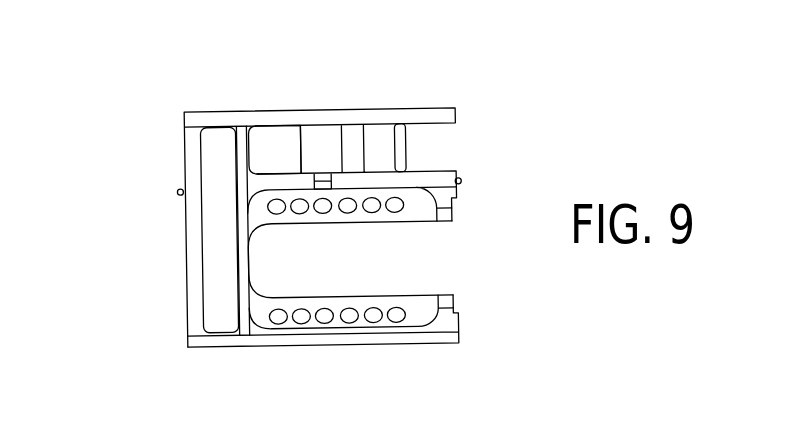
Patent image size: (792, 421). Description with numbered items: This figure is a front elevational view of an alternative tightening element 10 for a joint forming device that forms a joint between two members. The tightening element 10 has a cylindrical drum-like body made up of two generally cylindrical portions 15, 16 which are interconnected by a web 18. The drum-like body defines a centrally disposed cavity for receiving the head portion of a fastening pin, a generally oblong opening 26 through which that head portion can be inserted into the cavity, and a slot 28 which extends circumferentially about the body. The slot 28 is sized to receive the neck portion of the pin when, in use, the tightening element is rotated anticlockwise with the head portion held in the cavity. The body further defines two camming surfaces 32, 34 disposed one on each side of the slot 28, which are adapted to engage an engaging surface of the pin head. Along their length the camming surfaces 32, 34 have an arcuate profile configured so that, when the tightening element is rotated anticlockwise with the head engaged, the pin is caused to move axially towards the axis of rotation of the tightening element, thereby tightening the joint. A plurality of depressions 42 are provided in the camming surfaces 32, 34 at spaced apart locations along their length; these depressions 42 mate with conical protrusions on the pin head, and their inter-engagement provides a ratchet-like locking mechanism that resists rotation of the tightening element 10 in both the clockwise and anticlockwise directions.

The tightening element 10 is at (438, 99).
The cylindrical portion 15 is at (278, 138).
The cylindrical portion 16 is at (458, 328).
The web 18 is at (217, 246).
The oblong opening 26 is at (278, 279).
The slot 28 is at (433, 250).
The camming surface 32 is at (425, 213).
The camming surface 34 is at (425, 307).
The depressions 42 is at (325, 317).